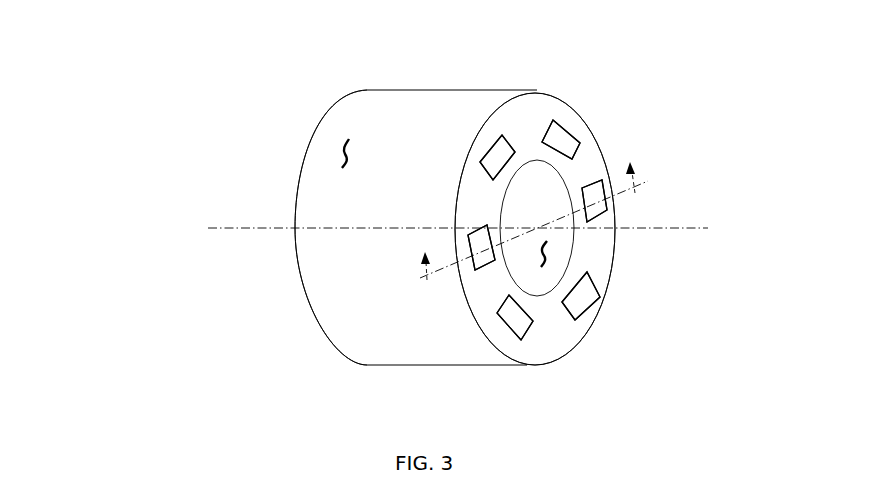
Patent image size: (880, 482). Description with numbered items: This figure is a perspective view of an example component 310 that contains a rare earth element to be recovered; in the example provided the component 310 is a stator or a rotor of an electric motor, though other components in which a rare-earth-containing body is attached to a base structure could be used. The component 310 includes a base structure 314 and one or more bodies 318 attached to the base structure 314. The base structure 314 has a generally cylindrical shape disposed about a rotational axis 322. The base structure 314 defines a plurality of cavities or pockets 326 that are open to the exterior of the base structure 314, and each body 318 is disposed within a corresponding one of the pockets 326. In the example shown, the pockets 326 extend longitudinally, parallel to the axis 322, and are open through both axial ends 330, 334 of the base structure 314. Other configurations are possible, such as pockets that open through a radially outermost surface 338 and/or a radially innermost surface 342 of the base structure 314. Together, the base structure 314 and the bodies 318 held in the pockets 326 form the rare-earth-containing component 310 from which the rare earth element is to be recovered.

The component 310 is at (267, 95).
The base structure 314 is at (355, 330).
The bodies 318 is at (555, 133).
The rotational axis 322 is at (218, 227).
The pockets 326 is at (483, 228).
The axial end 330 is at (552, 107).
The axial end 334 is at (298, 270).
The radially outermost surface 338 is at (343, 157).
The radially innermost surface 342 is at (546, 256).